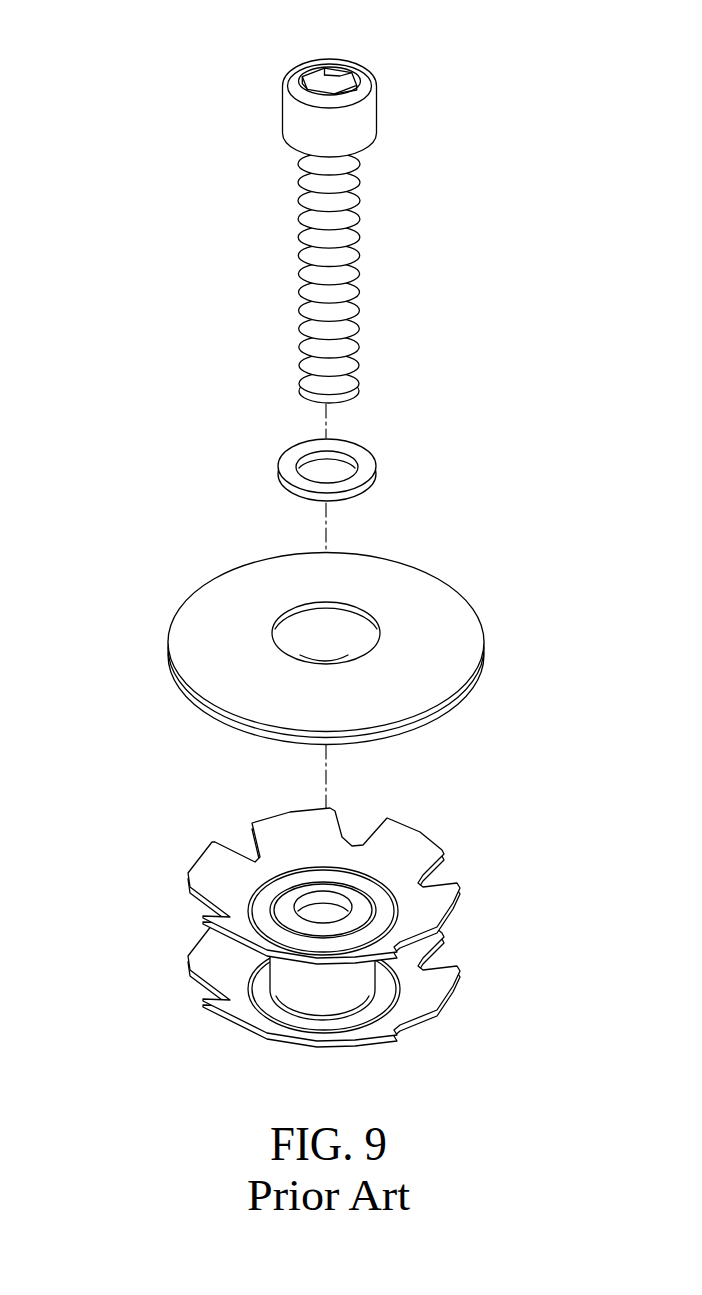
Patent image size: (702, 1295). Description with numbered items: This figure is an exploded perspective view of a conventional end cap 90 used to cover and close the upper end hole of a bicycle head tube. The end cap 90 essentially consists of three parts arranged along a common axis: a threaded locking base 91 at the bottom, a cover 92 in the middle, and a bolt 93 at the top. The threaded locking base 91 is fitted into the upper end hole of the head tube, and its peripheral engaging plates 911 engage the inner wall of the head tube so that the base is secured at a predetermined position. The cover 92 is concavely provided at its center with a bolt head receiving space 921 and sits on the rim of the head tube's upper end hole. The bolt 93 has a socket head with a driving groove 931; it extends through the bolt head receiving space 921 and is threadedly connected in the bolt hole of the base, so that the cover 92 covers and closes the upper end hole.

The end cap 90 is at (140, 436).
The threaded locking base 91 is at (363, 880).
The peripheral engaging plates 911 is at (448, 896).
The cover 92 is at (431, 574).
The bolt head receiving space 921 is at (303, 630).
The bolt 93 is at (372, 217).
The driving groove 931 is at (340, 83).